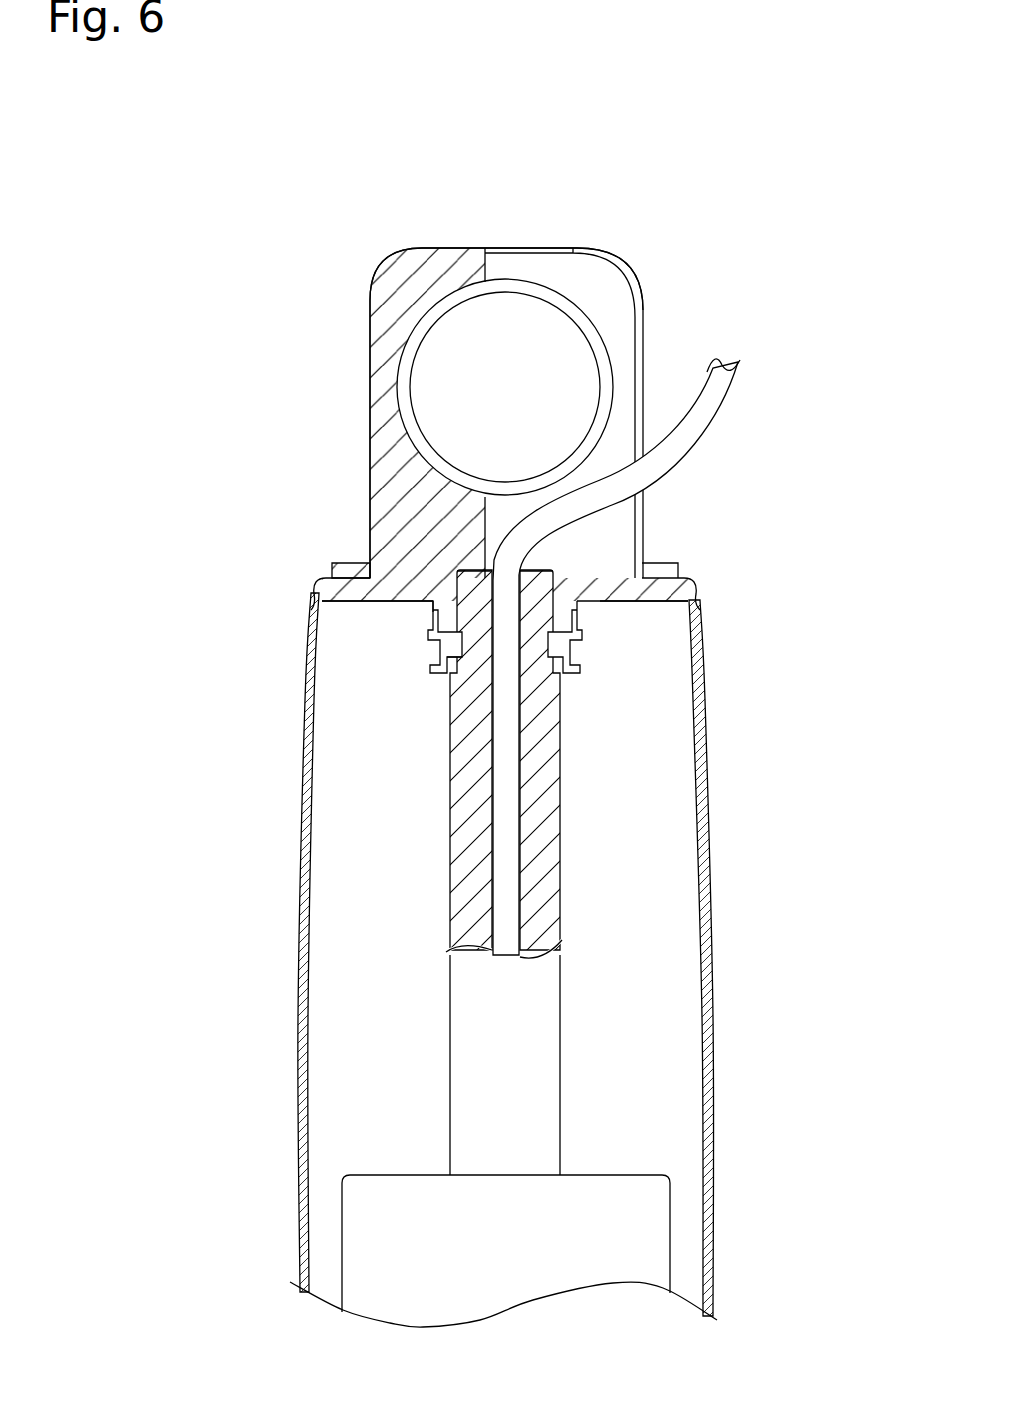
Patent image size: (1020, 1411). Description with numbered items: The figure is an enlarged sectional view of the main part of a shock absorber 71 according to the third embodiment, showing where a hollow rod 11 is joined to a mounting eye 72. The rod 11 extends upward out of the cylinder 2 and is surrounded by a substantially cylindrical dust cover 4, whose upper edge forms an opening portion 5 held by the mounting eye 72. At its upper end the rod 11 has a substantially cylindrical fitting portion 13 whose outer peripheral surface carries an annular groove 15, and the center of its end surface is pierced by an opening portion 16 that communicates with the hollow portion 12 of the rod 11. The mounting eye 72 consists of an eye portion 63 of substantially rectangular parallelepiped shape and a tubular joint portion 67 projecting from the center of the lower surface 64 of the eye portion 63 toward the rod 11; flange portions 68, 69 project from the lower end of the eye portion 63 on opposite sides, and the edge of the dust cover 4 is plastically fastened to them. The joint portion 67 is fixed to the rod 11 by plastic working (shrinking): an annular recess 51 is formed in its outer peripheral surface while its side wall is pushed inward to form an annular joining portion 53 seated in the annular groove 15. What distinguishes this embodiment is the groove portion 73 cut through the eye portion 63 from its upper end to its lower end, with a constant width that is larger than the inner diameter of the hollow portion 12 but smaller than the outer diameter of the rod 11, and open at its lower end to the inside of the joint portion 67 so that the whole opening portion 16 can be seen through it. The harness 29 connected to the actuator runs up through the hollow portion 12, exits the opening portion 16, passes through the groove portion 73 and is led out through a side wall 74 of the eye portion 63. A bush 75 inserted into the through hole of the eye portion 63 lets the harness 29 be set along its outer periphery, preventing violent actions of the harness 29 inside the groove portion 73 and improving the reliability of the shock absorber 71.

The cylinder 2 is at (670, 1230).
The dust cover 4 is at (300, 1100).
The opening portion 5 is at (517, 579).
The rod 11 is at (523, 1053).
The hollow portion 12 is at (493, 857).
The fitting portion 13 is at (470, 573).
The annular groove 15 is at (553, 644).
The opening portion 16 is at (535, 578).
The harness 29 is at (720, 366).
The annular recess 51 is at (437, 657).
The joining portion 53 is at (473, 658).
The eye portion 63 is at (380, 413).
The lower surface 64 is at (630, 602).
The joint portion 67 is at (426, 629).
The flange portion 68 is at (342, 593).
The flange portion 69 is at (683, 593).
The shock absorber 71 is at (758, 162).
The mounting eye 72 is at (366, 273).
The groove portion 73 is at (603, 300).
The side wall 74 is at (645, 343).
The bush 75 is at (452, 300).